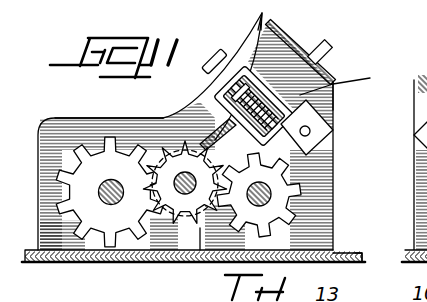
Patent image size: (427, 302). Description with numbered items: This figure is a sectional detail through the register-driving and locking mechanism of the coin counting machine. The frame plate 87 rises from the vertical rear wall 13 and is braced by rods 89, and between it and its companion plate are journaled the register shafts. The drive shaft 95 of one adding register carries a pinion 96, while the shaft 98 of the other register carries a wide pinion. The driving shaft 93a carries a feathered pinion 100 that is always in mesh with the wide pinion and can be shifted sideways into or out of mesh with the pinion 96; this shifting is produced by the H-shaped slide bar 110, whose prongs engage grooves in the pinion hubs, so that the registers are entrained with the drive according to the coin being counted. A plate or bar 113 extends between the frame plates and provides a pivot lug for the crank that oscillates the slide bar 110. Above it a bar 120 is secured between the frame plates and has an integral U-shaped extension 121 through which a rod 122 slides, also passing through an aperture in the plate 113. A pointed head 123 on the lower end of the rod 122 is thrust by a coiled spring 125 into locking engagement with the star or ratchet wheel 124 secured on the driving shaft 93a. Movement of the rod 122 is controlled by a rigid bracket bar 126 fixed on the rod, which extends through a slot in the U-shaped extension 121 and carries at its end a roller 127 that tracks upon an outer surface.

The frame plate 87 is at (107, 150).
The pinion 96 is at (92, 156).
The driving shaft 93a is at (175, 152).
The H-shaped slide bar 110 is at (215, 145).
The roller 127 is at (236, 43).
The U-shaped extension 121 is at (250, 20).
The bracket bar 126 is at (295, 48).
The rod 122 is at (331, 47).
The plate or bar 113 is at (334, 80).
The coiled spring 125 is at (354, 79).
The bar 120 is at (268, 142).
The pointed head 123 is at (333, 134).
The register shaft 98 is at (268, 196).
The drive shaft 95 is at (111, 205).
The star or ratchet wheel 124 is at (180, 198).
The pinion 100 is at (203, 230).
The rods 89 is at (300, 252).
The rear wall 13 is at (360, 261).